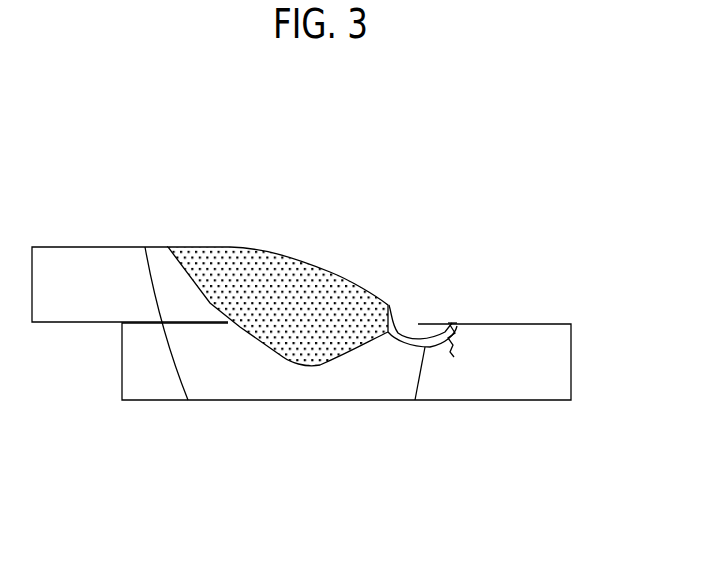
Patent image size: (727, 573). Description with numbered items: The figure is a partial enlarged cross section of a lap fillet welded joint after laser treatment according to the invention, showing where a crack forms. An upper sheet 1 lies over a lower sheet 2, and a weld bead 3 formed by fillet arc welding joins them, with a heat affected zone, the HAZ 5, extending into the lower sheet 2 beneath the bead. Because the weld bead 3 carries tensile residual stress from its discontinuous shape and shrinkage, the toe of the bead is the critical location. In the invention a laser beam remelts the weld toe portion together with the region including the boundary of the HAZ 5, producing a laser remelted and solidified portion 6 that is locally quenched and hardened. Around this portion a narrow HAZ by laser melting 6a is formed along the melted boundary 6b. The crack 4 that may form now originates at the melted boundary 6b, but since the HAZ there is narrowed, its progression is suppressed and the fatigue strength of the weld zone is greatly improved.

The upper sheet 1 is at (336, 334).
The lower sheet 2 is at (70, 260).
The weld bead 3 is at (317, 280).
The crack 4 is at (465, 347).
The HAZ (heat affected zone) 5 is at (250, 385).
The laser remelted and solidified portion 6 is at (417, 333).
The HAZ by laser melting 6a is at (392, 312).
The melted boundary 6b is at (452, 323).